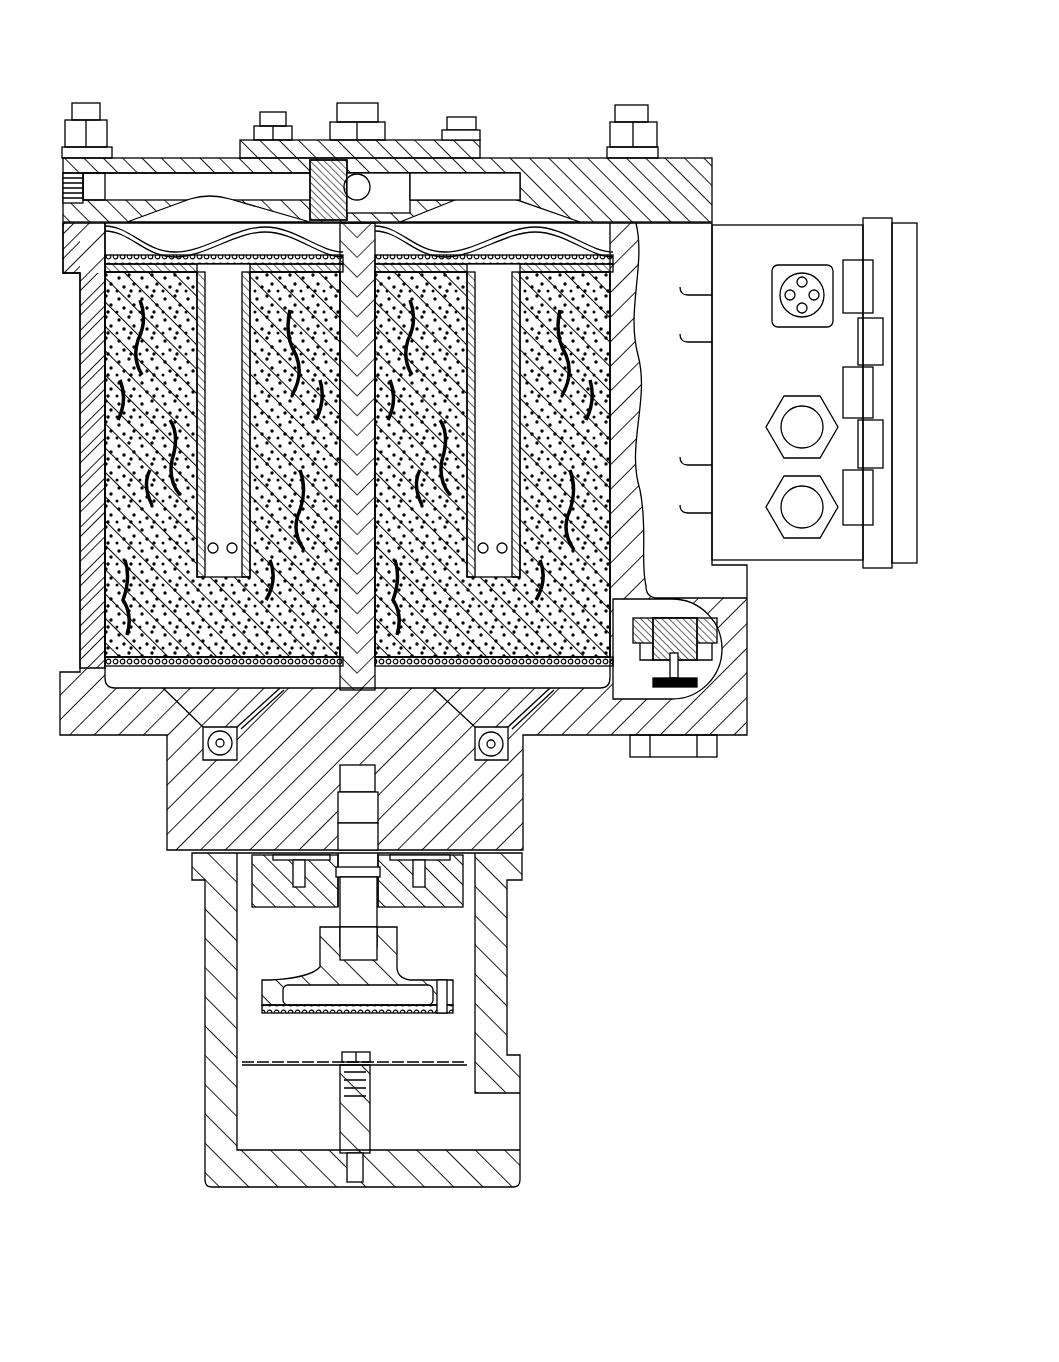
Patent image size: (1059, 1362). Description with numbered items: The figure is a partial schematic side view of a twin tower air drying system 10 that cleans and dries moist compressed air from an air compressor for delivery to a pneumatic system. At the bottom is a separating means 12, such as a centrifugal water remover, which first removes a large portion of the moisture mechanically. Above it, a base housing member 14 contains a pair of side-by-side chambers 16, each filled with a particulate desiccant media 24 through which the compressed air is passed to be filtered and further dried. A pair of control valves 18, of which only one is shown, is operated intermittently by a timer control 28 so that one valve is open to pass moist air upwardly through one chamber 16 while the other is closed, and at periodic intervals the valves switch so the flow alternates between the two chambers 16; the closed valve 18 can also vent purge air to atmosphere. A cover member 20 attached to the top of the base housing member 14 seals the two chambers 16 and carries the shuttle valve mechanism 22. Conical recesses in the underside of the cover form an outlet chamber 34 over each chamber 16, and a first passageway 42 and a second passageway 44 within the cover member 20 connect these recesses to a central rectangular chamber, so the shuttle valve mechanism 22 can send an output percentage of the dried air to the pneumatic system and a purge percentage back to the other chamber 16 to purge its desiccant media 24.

The twin tower air drying system 10 is at (737, 143).
The separating means 12 is at (180, 1022).
The base housing member 14 is at (562, 722).
The chambers 16 is at (160, 255).
The control valves 18 is at (718, 628).
The cover member 20 is at (583, 168).
The shuttle valve mechanism 22 is at (325, 160).
The particulate desiccant media 24 is at (158, 660).
The timer control 28 is at (782, 244).
The outlet chamber 34 is at (207, 215).
The first passageway 42 is at (188, 160).
The second passageway 44 is at (485, 180).